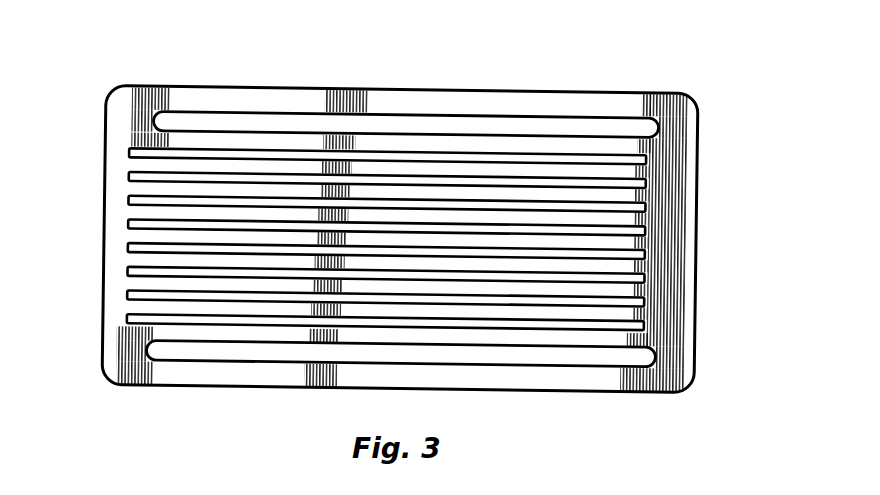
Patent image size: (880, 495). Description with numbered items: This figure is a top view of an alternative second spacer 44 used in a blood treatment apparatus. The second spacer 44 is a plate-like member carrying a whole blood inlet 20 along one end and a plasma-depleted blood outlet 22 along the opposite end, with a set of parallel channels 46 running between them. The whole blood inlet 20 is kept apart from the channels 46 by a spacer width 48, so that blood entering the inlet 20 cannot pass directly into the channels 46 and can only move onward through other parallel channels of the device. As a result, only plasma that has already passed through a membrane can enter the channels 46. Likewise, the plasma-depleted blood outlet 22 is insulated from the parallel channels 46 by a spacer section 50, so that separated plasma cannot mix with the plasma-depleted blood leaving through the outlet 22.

The whole blood inlet 20 is at (563, 345).
The plasma-depleted blood outlet 22 is at (497, 118).
The second spacer 44 is at (685, 172).
The channels 46 is at (645, 205).
The spacer width 48 is at (620, 338).
The spacer section 50 is at (226, 138).